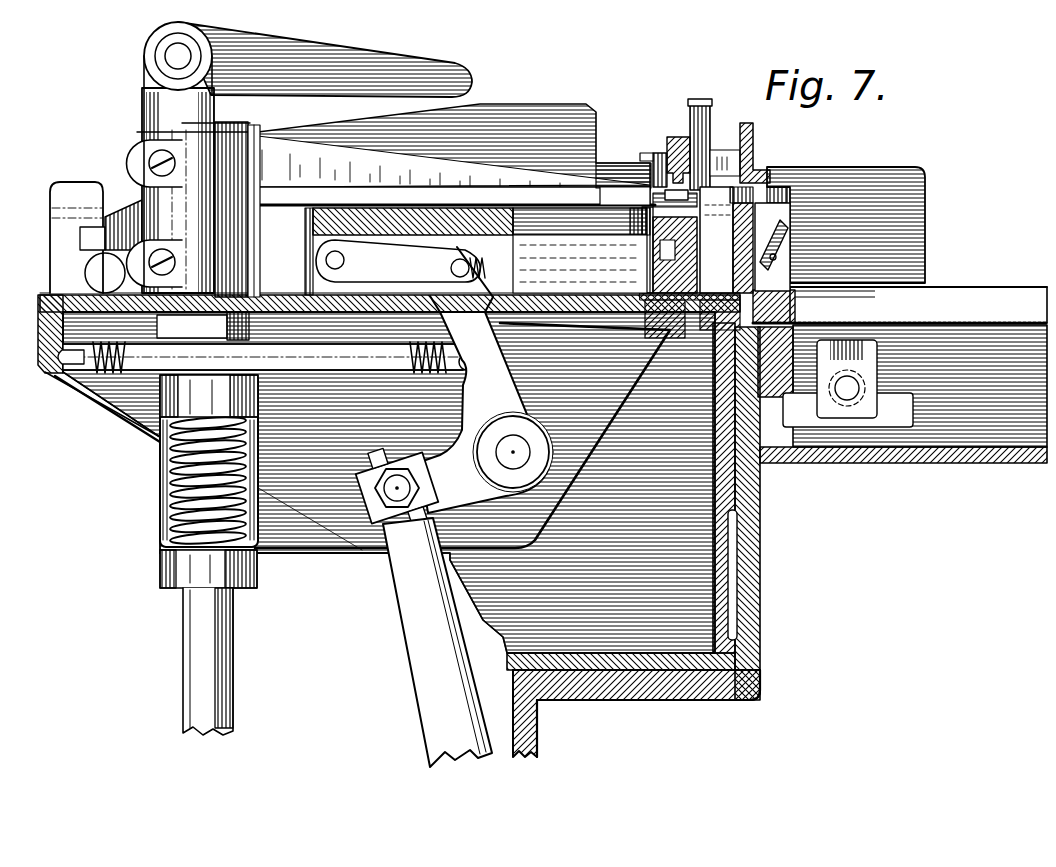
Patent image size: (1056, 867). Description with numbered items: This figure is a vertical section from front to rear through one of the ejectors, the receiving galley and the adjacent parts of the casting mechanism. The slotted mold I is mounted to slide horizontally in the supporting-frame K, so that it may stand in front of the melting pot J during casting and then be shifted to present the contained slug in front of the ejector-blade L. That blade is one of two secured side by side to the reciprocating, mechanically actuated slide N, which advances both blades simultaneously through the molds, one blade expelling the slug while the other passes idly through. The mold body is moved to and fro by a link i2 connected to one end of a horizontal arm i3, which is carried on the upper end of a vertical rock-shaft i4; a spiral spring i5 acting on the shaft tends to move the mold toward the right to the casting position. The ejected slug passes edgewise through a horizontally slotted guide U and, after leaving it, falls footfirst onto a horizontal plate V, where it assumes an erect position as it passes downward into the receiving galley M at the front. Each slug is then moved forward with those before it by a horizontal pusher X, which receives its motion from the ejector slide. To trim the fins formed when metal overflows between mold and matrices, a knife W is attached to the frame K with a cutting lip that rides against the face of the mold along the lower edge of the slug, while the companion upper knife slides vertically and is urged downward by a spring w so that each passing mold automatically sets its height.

The melting pot J is at (389, 378).
The supporting-frame K is at (664, 150).
The ejector-blade L is at (595, 218).
The slide N is at (409, 251).
The slotted mold I is at (669, 243).
The horizontal pusher X is at (728, 280).
The horizontal plate V is at (772, 239).
The horizontally slotted guide U is at (768, 178).
The knife W is at (707, 112).
The spring w is at (684, 133).
The receiving galley M is at (871, 310).
The link i2 is at (680, 192).
The horizontal arm i3 is at (565, 192).
The vertical rock-shaft i4 is at (234, 623).
The spiral spring i5 is at (162, 502).